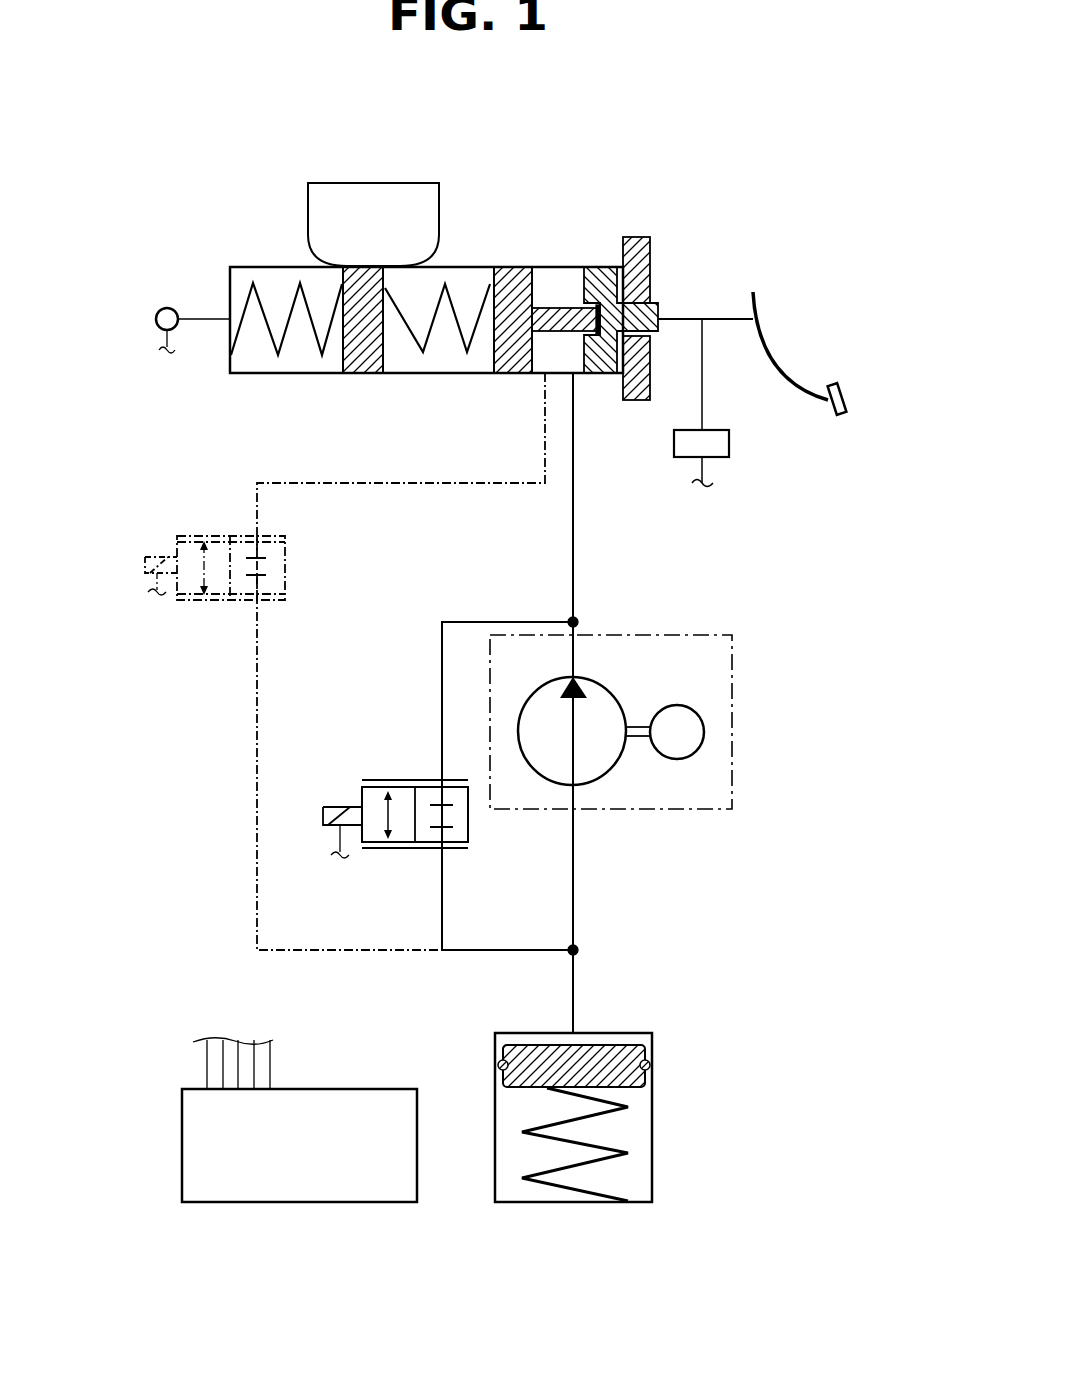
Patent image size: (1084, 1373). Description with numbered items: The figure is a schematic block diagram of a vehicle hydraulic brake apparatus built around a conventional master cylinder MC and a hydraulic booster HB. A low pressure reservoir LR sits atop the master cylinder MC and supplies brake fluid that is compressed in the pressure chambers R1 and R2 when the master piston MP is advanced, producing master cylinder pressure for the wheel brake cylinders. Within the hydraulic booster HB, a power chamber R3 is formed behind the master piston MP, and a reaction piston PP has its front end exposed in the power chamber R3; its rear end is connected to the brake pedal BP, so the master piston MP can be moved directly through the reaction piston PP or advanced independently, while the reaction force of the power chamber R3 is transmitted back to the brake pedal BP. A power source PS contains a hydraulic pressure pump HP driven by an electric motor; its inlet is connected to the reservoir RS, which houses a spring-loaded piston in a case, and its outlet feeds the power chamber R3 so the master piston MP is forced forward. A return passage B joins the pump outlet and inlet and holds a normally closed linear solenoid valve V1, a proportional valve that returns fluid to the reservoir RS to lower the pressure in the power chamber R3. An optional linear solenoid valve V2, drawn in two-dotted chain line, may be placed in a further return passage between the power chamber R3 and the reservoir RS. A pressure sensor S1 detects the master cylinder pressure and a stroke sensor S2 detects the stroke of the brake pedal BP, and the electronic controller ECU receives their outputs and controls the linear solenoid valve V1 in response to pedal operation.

The low pressure reservoir LR is at (308, 206).
The pressure sensor S1 is at (163, 307).
The pressure chamber R1 is at (257, 358).
The master cylinder MC is at (333, 378).
The pressure chamber R2 is at (485, 357).
The master piston MP is at (518, 270).
The power chamber R3 is at (553, 285).
The hydraulic booster HB is at (585, 262).
The reaction piston PP is at (598, 270).
The brake pedal BP is at (782, 370).
The stroke sensor S2 is at (731, 454).
The linear solenoid valve V2 is at (287, 560).
The linear solenoid valve V1 is at (415, 787).
The hydraulic pressure pump HP is at (598, 677).
The power source PS is at (733, 693).
The return passage B is at (442, 922).
The reservoir RS is at (652, 1135).
The electronic controller ECU is at (287, 1203).